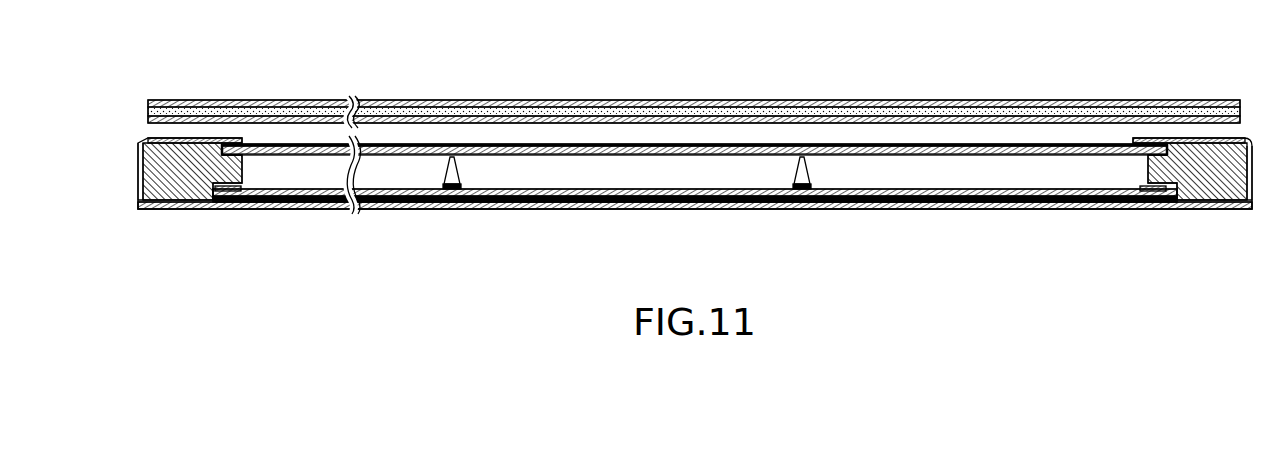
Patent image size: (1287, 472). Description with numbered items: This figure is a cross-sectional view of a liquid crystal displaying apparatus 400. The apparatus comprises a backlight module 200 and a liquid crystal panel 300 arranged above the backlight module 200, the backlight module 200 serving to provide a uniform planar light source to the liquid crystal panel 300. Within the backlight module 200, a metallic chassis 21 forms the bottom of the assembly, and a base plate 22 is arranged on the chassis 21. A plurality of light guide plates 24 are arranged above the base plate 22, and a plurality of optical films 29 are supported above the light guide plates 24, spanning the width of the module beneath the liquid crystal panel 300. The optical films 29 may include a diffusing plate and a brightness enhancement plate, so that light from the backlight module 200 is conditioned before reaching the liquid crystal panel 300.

The liquid crystal displaying apparatus 400 is at (712, 35).
The liquid crystal panel 300 is at (420, 100).
The backlight module 200 is at (695, 173).
The optical films 29 is at (1002, 144).
The base plate 22 is at (992, 195).
The metallic chassis 21 is at (1115, 207).
The light guide plates 24 is at (735, 190).